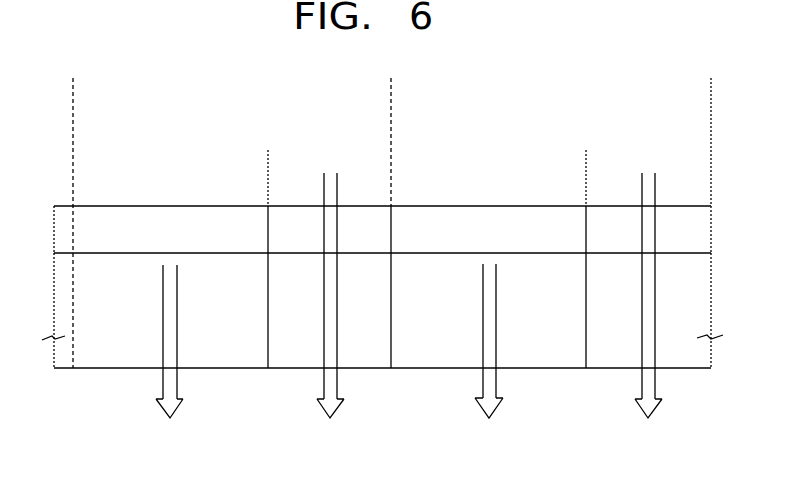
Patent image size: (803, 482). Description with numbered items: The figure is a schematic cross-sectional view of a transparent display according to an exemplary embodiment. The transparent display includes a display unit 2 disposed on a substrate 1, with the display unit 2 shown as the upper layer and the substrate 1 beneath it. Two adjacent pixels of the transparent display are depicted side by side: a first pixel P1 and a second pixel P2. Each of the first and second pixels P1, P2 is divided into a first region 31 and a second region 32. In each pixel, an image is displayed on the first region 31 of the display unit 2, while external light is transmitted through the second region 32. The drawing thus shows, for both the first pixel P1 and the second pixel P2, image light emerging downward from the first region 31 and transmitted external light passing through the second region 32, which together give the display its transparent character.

The substrate 1 is at (62, 285).
The display unit 2 is at (62, 231).
The first region 31 is at (268, 157).
The second region 32 is at (391, 157).
The first pixel P1 is at (391, 82).
The second pixel P2 is at (711, 82).